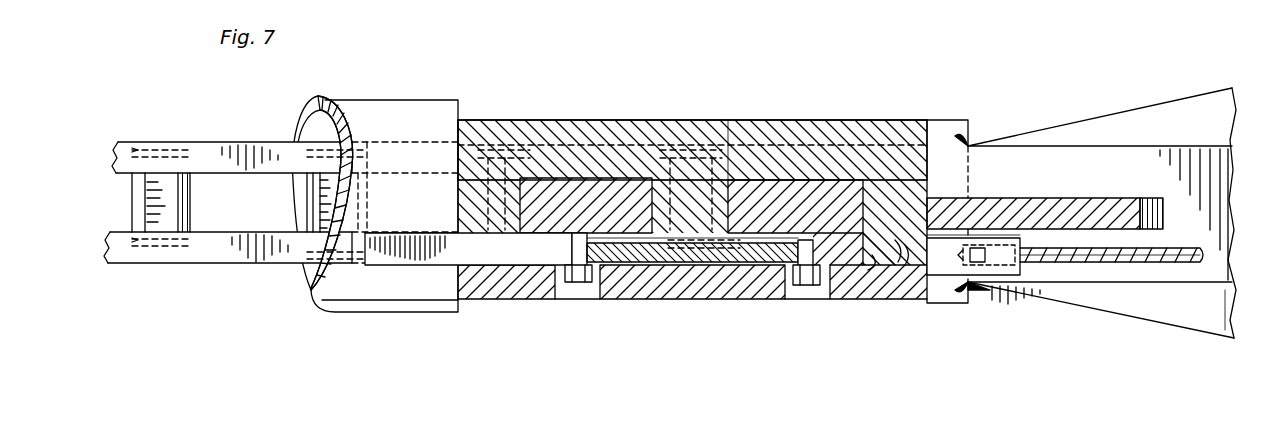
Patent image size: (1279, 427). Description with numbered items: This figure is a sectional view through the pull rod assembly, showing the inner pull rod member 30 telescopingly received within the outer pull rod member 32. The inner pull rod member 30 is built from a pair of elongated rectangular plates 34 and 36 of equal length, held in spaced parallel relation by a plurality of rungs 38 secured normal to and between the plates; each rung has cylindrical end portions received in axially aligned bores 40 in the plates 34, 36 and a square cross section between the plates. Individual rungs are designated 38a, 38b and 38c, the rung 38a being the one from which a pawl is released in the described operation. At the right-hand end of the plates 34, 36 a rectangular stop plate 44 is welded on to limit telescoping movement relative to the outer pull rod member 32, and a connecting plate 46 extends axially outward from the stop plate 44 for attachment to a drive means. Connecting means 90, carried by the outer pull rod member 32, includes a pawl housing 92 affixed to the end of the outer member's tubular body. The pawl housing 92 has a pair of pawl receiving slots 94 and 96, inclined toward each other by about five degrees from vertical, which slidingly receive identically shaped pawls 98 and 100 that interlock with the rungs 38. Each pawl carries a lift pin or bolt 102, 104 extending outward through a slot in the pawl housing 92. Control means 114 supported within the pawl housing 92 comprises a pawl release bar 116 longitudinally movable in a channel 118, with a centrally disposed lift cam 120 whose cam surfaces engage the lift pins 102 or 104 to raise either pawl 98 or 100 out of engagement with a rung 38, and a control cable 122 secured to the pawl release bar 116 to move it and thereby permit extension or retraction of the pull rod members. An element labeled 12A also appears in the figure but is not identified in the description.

The inner pull rod member 30 is at (128, 135).
The outer pull rod member 32 is at (408, 92).
The elongated rectangular plate 34 is at (215, 264).
The elongated rectangular plate 36 is at (252, 148).
The rung 38 is at (150, 180).
The rung 38a is at (755, 170).
The housing section 38b is at (528, 150).
The cross member portion 38c is at (318, 195).
The bore 40 is at (183, 147).
The stop plate 44 is at (950, 300).
The connecting plate 46 is at (1178, 118).
The connecting means 90 is at (950, 118).
The pawl housing 92 is at (862, 118).
The pawl receiving slot 94 is at (876, 214).
The pawl receiving slot 96 is at (635, 266).
The pawl 98 is at (750, 185).
The pawl 100 is at (590, 178).
The lift pin 102 is at (800, 285).
The lift pin 104 is at (580, 280).
The control means 114 is at (1032, 285).
The pawl release bar 116 is at (1005, 275).
The channel 118 is at (868, 270).
The lift cam 120 is at (735, 268).
The control cable 122 is at (1188, 262).
The stop element 12A is at (905, 268).